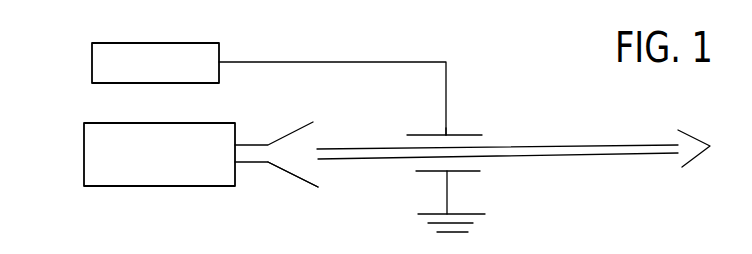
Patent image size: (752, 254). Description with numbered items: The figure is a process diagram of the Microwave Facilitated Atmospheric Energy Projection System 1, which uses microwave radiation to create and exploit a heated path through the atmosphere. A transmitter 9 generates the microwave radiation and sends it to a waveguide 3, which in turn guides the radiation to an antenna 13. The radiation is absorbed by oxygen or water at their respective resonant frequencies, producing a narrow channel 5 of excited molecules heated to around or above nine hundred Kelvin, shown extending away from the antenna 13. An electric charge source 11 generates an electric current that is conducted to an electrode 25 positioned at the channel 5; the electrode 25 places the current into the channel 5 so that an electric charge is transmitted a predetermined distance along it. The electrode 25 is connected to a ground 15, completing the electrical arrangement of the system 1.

The Microwave Facilitated Atmospheric Energy Projection System 1 is at (358, 49).
The waveguide 3 is at (260, 163).
The channel 5 is at (580, 152).
The transmitter 9 is at (84, 155).
The electric charge source 11 is at (92, 67).
The antenna 13 is at (292, 175).
The ground 15 is at (470, 230).
The electrode 25 is at (457, 130).